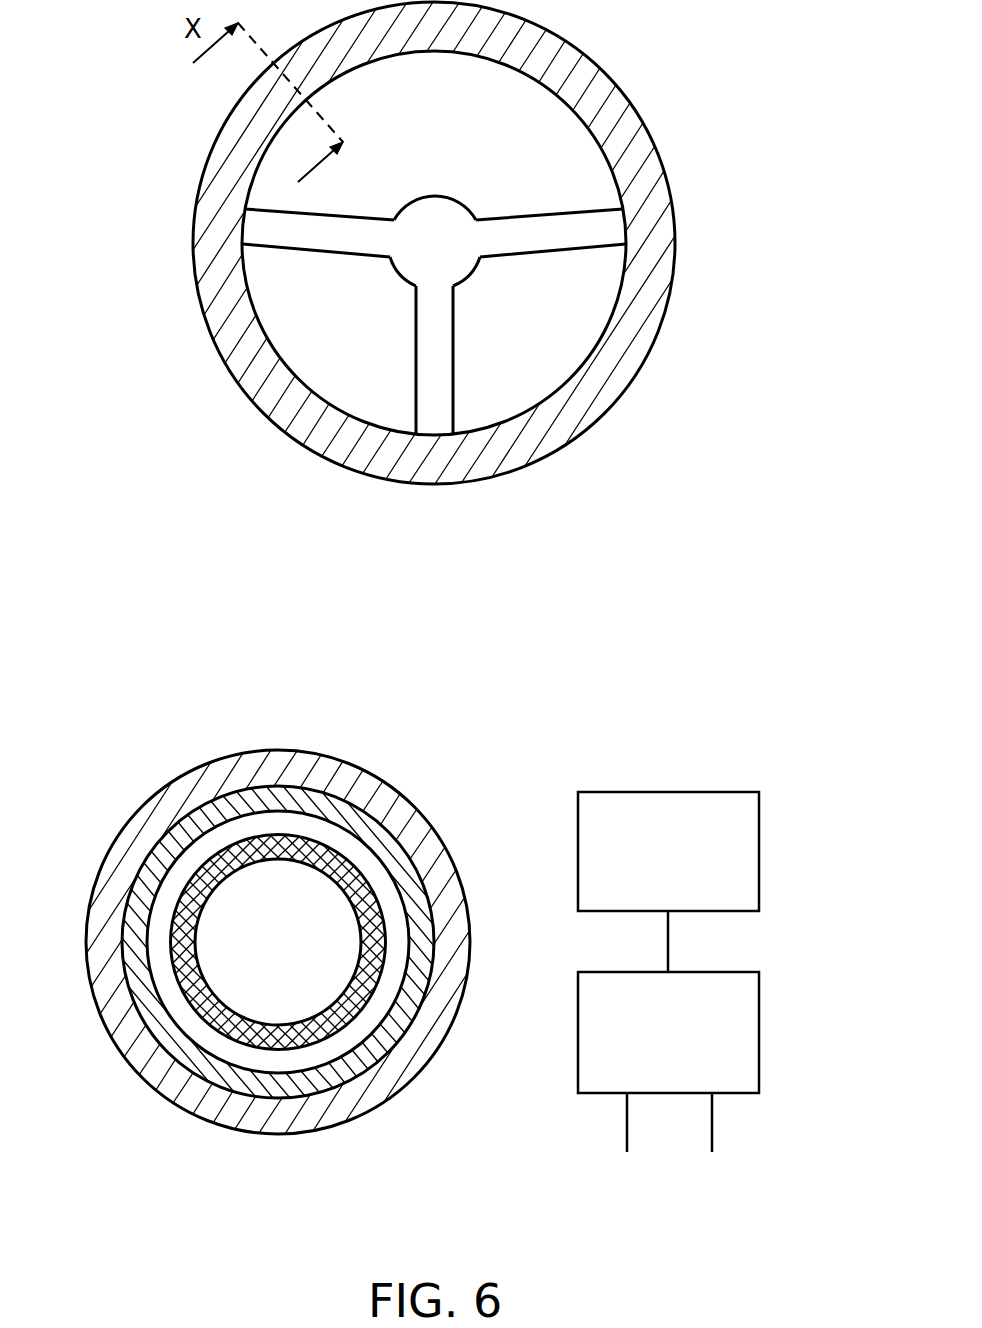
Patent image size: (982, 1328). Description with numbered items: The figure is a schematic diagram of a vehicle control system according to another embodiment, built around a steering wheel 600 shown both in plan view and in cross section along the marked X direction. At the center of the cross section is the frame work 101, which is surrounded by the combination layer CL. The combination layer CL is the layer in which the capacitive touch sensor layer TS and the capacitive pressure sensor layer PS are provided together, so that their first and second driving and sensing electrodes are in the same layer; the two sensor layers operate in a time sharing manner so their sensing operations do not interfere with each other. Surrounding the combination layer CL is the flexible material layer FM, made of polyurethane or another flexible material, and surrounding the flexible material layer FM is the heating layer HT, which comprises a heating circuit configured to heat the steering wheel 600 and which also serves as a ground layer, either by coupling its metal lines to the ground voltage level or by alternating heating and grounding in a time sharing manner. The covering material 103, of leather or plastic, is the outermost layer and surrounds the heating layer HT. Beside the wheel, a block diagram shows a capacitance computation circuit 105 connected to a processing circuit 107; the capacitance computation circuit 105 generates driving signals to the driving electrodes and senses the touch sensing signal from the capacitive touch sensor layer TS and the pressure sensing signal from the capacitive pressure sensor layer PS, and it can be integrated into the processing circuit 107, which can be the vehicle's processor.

The steering wheel 600 is at (641, 66).
The covering material 103 is at (665, 238).
The frame work 101 is at (572, 232).
The processing circuit 107 is at (760, 848).
The capacitance computation circuit 105 is at (760, 1030).
The heating layer HT is at (420, 892).
The combination layer CL is at (367, 1003).
The flexible material layer FM is at (319, 1055).
The capacitive touch sensor layer TS is at (626, 1140).
The capacitive pressure sensor layer PS is at (712, 1140).